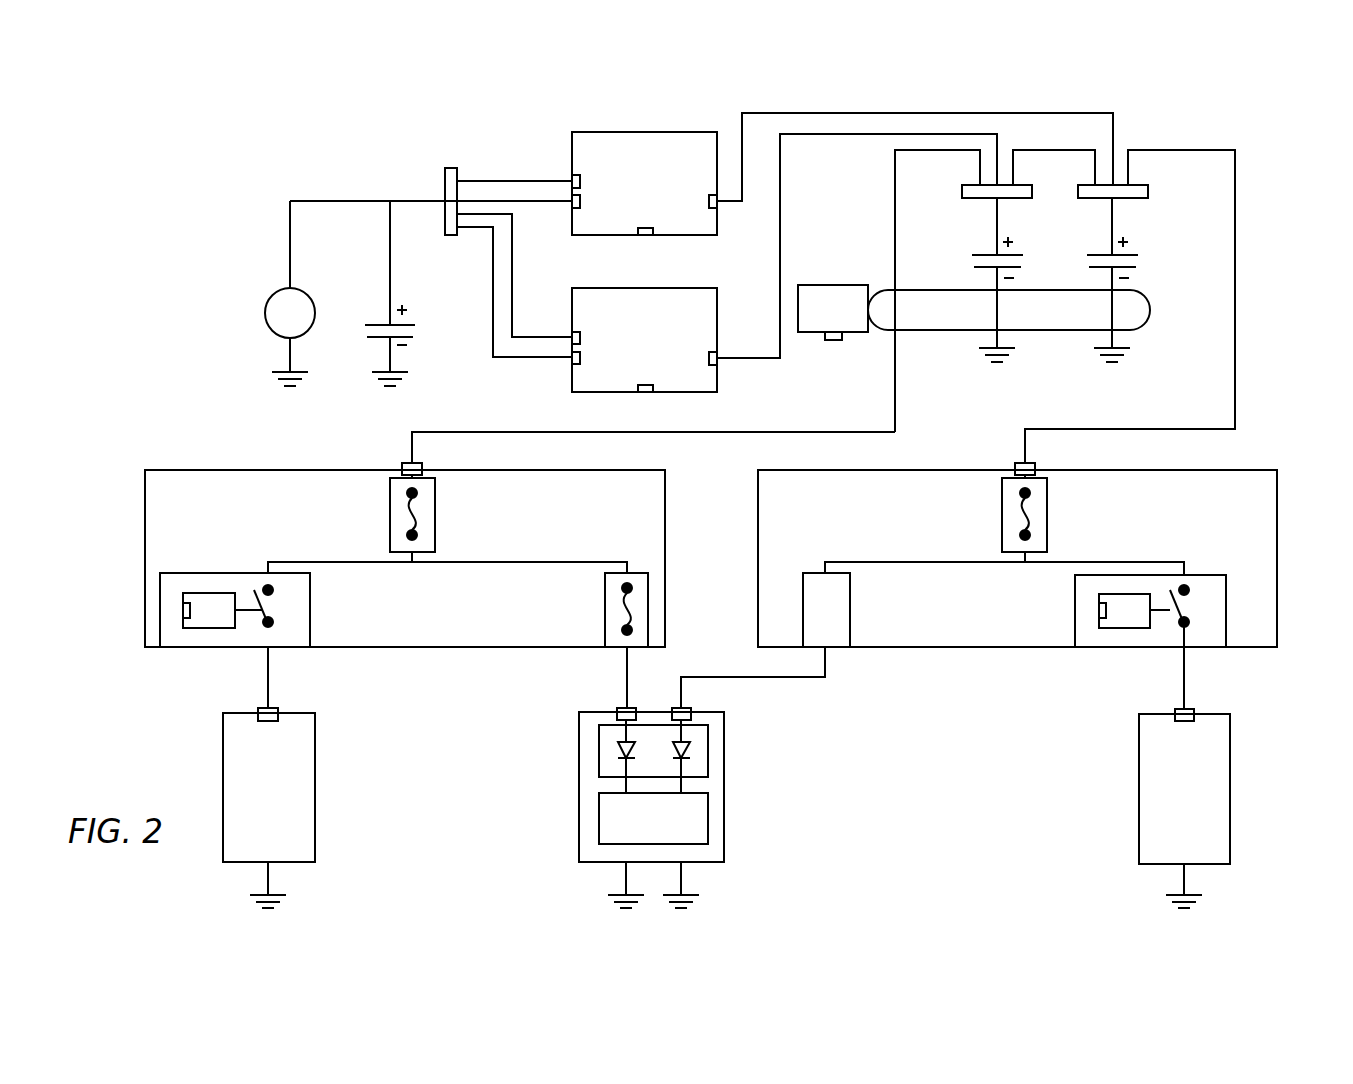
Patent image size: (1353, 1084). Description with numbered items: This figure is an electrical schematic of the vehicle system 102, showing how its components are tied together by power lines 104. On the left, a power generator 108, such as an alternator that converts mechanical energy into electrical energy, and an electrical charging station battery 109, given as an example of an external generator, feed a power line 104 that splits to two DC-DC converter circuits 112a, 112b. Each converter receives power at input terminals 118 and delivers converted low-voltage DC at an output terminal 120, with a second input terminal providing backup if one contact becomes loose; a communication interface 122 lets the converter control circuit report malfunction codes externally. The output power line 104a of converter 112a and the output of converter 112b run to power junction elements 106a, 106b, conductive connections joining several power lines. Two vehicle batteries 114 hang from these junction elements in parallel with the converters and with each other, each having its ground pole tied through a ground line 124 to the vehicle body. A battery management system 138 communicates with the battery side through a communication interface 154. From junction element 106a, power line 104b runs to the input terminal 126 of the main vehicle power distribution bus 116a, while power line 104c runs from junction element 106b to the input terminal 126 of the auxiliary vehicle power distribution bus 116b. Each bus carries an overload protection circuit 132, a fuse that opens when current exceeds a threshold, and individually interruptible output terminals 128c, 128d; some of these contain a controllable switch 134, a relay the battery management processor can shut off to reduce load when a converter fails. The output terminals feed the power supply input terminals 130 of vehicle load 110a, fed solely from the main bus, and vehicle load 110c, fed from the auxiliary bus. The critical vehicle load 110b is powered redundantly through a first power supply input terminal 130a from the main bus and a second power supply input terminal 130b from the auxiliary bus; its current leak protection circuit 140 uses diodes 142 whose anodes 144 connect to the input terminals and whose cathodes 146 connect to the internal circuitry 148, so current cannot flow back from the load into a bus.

The vehicle system 102 is at (180, 178).
The power line 104 is at (345, 200).
The power line 104a is at (782, 112).
The power line 104b is at (897, 395).
The power line 104c is at (1237, 228).
The power junction element 106a is at (970, 185).
The power junction element 106b is at (1141, 185).
The power generator 108 is at (272, 293).
The electrical charging station battery 109 is at (383, 324).
The vehicle load 110a is at (315, 838).
The critical vehicle load 110b is at (724, 838).
The vehicle load 110c is at (1230, 838).
The DC-DC converter circuit 112a is at (602, 132).
The DC-DC converter circuit 112b is at (602, 288).
The vehicle battery 114 is at (985, 255).
The main vehicle power distribution bus 116a is at (178, 470).
The auxiliary vehicle power distribution bus 116b is at (1260, 470).
The input terminal 118 is at (572, 200).
The output terminal 120 is at (717, 206).
The communication interface 122 is at (650, 237).
The ground line 124 is at (1002, 338).
The input terminal 126 is at (402, 467).
The output terminal 128c is at (310, 578).
The output terminal 128d is at (605, 585).
The power supply input terminal 130 is at (278, 712).
The first power supply input terminal 130a is at (617, 710).
The second power supply input terminal 130b is at (691, 712).
The overload protection circuit 132 is at (435, 525).
The controllable switch 134 is at (200, 630).
The battery management system 138 is at (835, 285).
The current leak protection circuit 140 is at (658, 710).
The diode 142 is at (620, 752).
The anode 144 is at (620, 742).
The cathode 146 is at (620, 758).
The internal circuitry 148 is at (599, 805).
The communication interface 154 is at (835, 342).